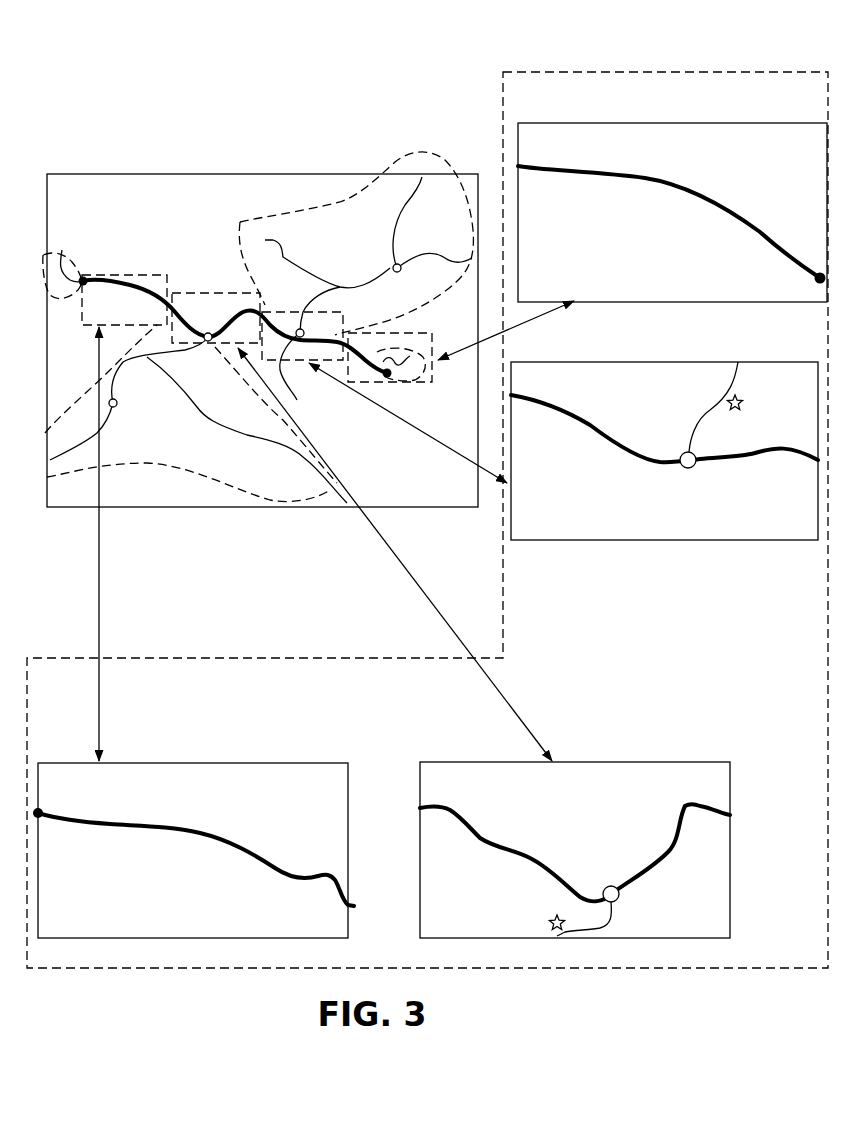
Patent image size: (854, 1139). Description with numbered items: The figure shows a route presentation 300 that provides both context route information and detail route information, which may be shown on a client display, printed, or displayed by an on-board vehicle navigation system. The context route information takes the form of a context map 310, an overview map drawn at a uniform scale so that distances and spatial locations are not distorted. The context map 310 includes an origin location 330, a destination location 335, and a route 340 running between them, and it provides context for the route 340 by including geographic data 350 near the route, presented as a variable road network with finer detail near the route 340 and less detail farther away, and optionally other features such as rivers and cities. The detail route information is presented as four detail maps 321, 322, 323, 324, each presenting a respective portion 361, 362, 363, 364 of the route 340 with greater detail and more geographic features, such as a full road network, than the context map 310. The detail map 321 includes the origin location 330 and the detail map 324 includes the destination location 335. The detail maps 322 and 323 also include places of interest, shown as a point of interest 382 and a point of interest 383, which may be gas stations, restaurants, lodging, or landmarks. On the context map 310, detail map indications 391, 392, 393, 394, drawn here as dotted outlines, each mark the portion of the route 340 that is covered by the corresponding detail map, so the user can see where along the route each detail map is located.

The route presentation 300 is at (427, 493).
The context map 310 is at (95, 174).
The detail map 321 is at (290, 763).
The detail map 322 is at (672, 762).
The detail map 323 is at (748, 362).
The detail map 324 is at (766, 123).
The origin location 330 is at (83, 279).
The destination location 335 is at (388, 378).
The route 340 is at (300, 340).
The geographic data 350 is at (409, 147).
The portion of the route 361 is at (229, 848).
The portion of the route 362 is at (486, 836).
The portion of the route 363 is at (585, 420).
The portion of the route 364 is at (559, 168).
The point of interest 382 is at (551, 920).
The point of interest 383 is at (744, 407).
The detail map indication 391 is at (135, 275).
The detail map indication 392 is at (213, 293).
The detail map indication 393 is at (278, 312).
The detail map indication 394 is at (382, 333).